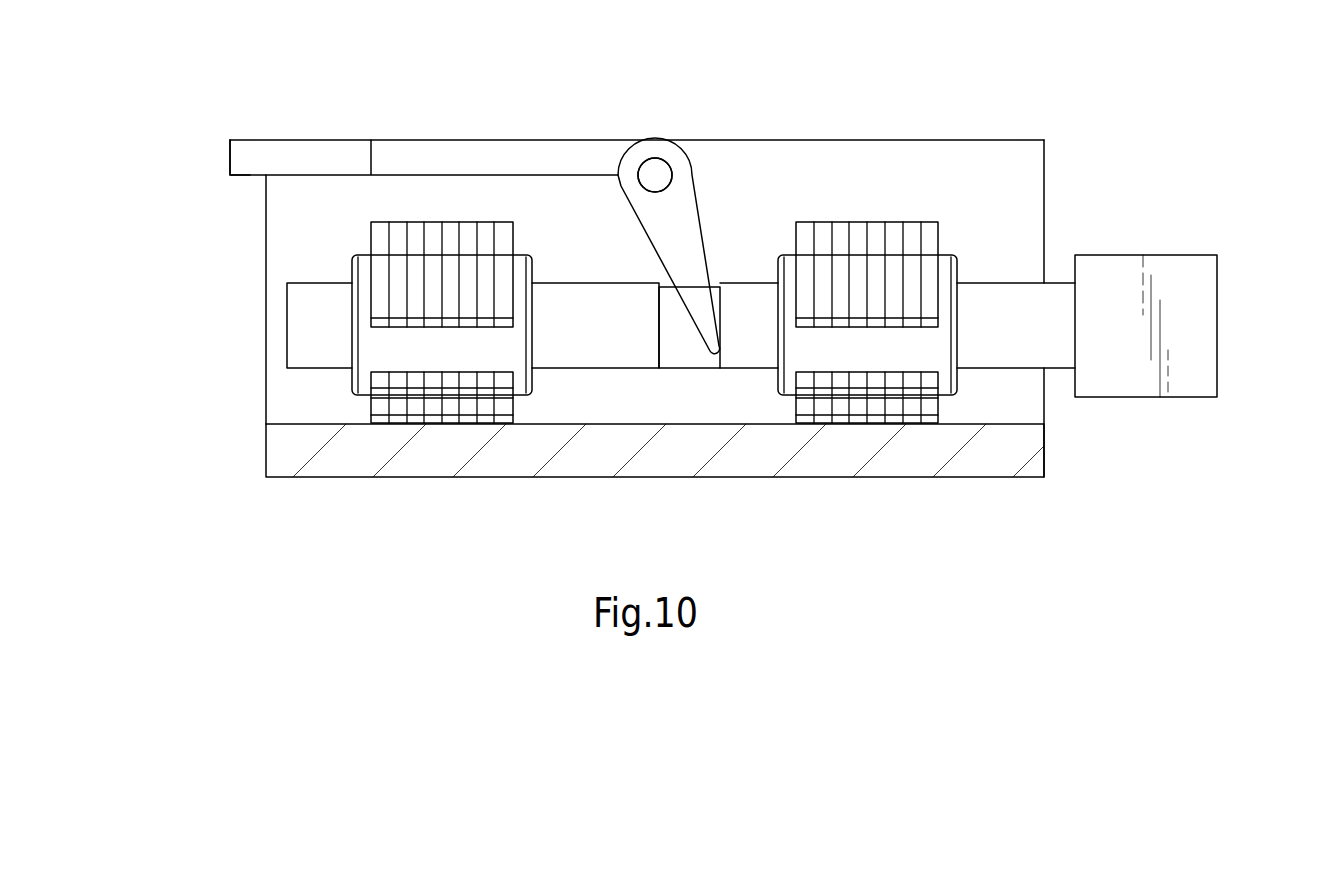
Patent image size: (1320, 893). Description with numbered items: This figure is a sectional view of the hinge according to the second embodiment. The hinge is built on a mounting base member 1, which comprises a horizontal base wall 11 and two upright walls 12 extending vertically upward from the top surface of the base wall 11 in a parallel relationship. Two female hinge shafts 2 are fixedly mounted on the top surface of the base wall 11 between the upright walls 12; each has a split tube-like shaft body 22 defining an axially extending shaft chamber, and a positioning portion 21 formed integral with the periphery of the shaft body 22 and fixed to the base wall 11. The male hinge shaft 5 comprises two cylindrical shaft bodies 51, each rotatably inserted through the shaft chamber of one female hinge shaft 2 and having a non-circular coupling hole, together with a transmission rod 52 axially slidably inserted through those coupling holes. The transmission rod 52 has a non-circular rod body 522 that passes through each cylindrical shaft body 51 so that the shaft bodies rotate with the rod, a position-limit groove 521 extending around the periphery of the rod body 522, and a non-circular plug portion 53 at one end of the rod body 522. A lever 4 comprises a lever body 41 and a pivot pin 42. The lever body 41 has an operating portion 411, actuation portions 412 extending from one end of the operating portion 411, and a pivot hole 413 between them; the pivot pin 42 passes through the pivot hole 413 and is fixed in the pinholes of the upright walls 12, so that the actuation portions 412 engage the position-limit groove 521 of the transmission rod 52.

The mounting base member 1 is at (263, 438).
The horizontal base wall 11 is at (903, 463).
The upright wall 12 is at (992, 140).
The female hinge shaft 2 is at (659, 312).
The positioning portion 21 is at (430, 420).
The split tube-like shaft body 22 is at (470, 232).
The lever 4 is at (458, 178).
The lever body 41 is at (263, 134).
The operating portion 411 is at (243, 157).
The actuation portion 412 is at (680, 233).
The pivot hole 413 is at (655, 172).
The pivot pin 42 is at (660, 168).
The male hinge shaft 5 is at (1183, 273).
The cylindrical shaft body 51 is at (363, 340).
The transmission rod 52 is at (639, 403).
The position-limit groove 521 is at (688, 372).
The non-circular rod body 522 is at (297, 310).
The non-circular plug portion 53 is at (1200, 318).